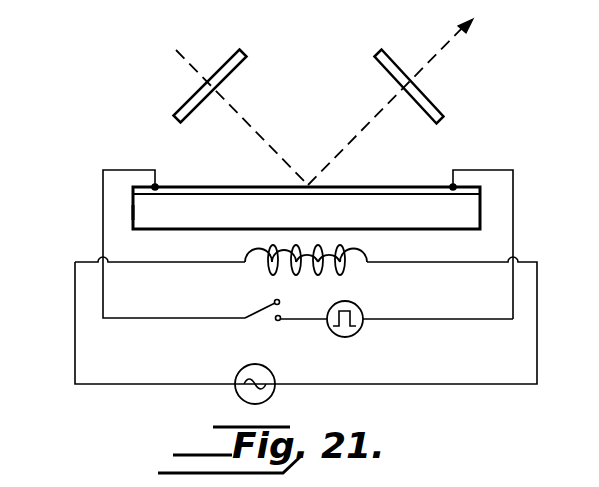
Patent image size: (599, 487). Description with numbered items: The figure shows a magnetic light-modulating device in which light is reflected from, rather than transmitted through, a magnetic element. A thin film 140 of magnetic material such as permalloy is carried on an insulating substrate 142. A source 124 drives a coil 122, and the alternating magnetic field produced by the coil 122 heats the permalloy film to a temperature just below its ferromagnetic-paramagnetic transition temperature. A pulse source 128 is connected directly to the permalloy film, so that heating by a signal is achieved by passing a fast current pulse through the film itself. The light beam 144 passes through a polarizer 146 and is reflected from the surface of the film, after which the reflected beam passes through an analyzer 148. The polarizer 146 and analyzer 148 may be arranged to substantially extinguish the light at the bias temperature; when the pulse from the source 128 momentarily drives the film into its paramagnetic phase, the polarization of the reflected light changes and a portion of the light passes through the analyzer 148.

The coil 122 is at (345, 267).
The source 124 is at (273, 370).
The pulse source 128 is at (357, 334).
The thin film 140 is at (197, 186).
The insulating substrate 142 is at (138, 212).
The light beam 144 is at (181, 52).
The polarizer 146 is at (240, 62).
The analyzer 148 is at (438, 108).